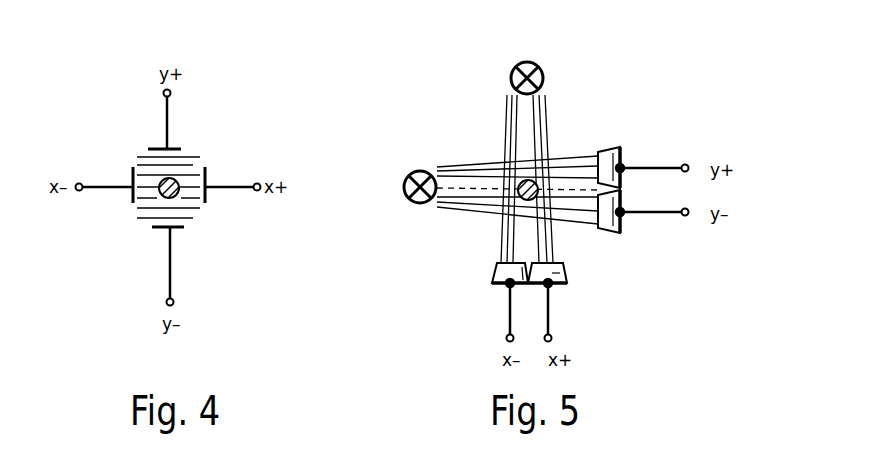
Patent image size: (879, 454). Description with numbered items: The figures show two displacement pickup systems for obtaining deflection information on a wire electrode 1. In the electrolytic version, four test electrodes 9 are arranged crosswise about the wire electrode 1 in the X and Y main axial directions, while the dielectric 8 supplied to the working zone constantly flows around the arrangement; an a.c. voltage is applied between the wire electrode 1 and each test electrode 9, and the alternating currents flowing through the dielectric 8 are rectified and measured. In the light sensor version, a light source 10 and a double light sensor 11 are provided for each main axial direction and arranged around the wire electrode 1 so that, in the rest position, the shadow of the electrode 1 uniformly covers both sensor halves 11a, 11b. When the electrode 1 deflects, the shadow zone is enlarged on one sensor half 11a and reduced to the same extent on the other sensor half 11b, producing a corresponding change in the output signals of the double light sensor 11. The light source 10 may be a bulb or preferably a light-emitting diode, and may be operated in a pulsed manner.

In FIG. 4, the wire electrode 1 is at (176, 180).
In FIG. 5, the wire electrode 1 is at (538, 181).
In FIG. 4, the dielectric 8 is at (187, 203).
In FIG. 4, the test electrodes 9 is at (130, 168).
In FIG. 5, the light source 10 is at (542, 78).
In FIG. 5, the double light sensor 11 is at (570, 229).
In FIG. 5, the sensor half 11a is at (620, 148).
In FIG. 5, the sensor half 11b is at (622, 232).